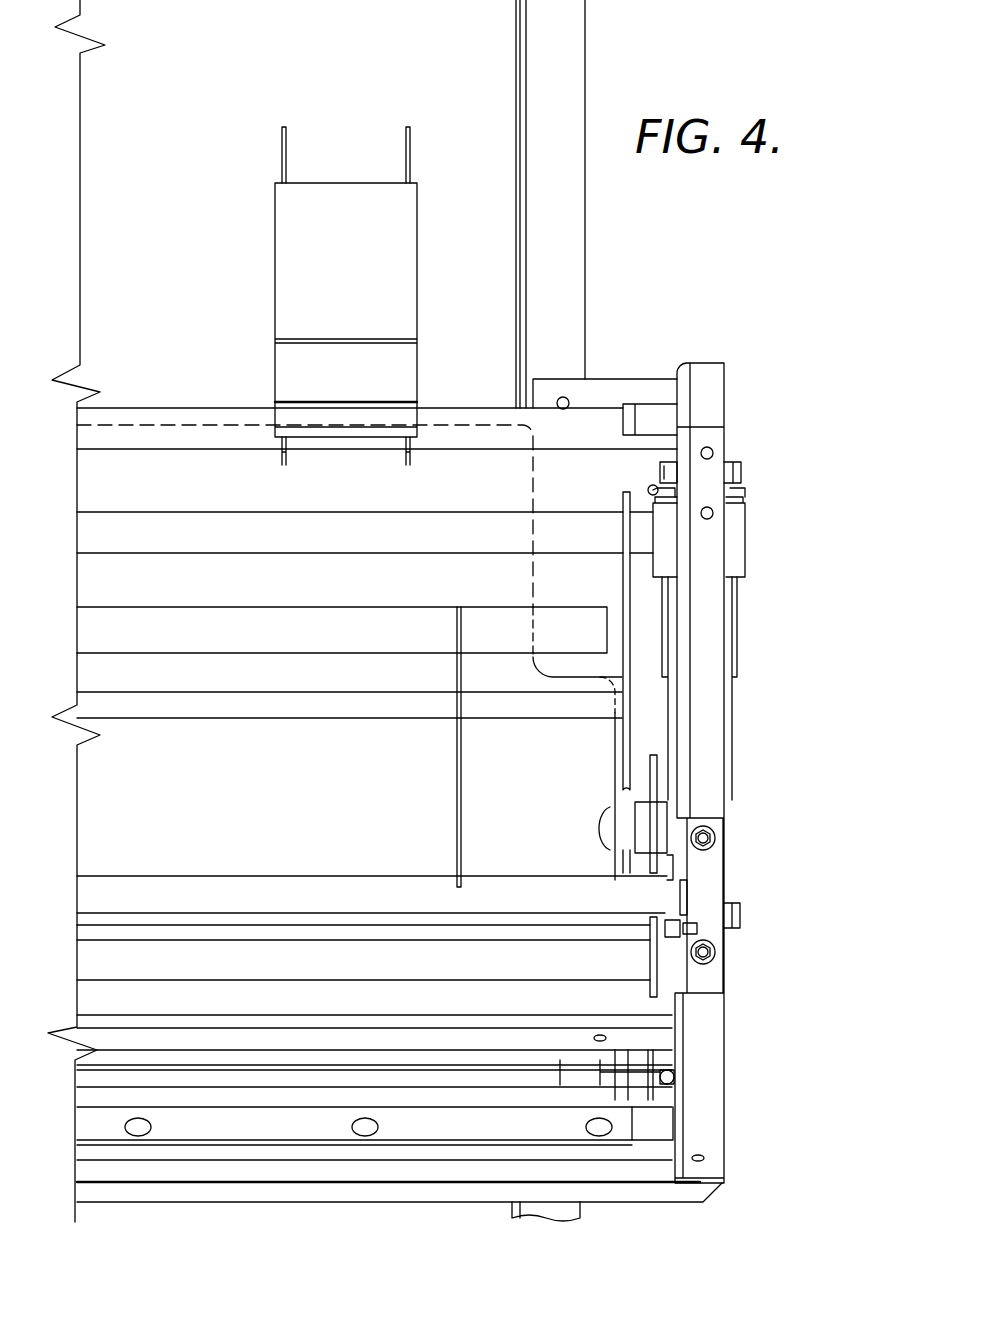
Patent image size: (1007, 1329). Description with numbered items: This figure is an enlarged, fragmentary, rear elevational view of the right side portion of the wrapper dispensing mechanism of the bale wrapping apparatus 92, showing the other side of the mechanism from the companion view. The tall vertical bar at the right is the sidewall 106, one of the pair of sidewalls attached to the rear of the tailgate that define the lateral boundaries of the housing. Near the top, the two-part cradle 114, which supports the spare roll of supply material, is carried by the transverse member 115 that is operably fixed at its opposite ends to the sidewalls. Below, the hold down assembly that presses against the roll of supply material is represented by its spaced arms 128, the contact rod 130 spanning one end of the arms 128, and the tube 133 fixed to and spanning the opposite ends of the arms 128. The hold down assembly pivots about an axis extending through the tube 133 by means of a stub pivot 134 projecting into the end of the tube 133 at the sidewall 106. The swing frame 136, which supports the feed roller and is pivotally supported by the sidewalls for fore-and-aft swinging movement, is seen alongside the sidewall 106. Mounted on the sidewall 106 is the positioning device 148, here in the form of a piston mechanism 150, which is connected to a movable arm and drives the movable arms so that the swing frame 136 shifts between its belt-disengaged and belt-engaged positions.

The bale wrapping apparatus 92 is at (607, 340).
The sidewall 106 is at (710, 750).
The two-part cradle 114 is at (313, 277).
The transverse member 115 is at (597, 422).
The spaced arms 128 is at (459, 793).
The contact rod 130 is at (383, 635).
The tube 133 is at (252, 887).
The stub pivot 134 is at (683, 895).
The swing frame 136 is at (627, 668).
The positioning device 148 is at (743, 450).
The piston mechanism 150 is at (735, 553).